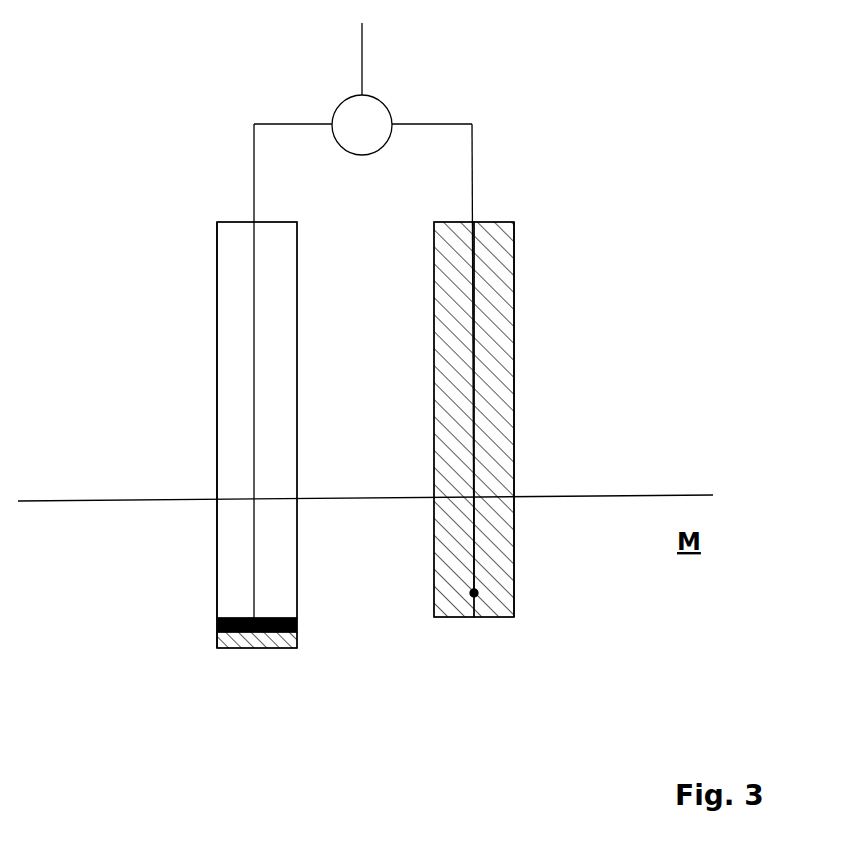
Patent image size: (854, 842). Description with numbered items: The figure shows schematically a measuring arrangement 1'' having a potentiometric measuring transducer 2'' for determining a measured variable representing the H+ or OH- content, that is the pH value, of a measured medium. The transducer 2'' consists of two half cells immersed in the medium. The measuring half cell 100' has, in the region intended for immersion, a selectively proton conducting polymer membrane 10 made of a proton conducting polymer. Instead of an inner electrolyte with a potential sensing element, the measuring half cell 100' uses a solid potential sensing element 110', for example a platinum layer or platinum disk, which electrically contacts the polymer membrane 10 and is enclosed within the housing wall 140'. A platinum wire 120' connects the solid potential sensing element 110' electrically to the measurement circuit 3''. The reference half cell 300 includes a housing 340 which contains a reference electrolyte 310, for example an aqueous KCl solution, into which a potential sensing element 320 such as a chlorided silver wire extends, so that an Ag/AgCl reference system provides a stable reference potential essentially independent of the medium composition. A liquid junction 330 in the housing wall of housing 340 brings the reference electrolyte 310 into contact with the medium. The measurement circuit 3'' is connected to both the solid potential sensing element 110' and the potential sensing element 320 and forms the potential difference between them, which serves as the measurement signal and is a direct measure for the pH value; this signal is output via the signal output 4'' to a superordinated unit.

The measuring arrangement 1'' is at (485, 68).
The potentiometric measuring transducer 2'' is at (385, 685).
The measurement circuit 3'' is at (332, 106).
The signal output 4'' is at (397, 56).
The polymer membrane 10 is at (223, 640).
The measuring half cell 100' is at (217, 406).
The solid potential sensing element 110' is at (221, 601).
The platinum wire 120' is at (217, 420).
The housing wall 140' is at (161, 435).
The reference half cell 300 is at (520, 222).
The reference electrolyte 310 is at (493, 328).
The potential sensing element 320 is at (480, 408).
The liquid junction 330 is at (478, 594).
The housing 340 is at (517, 548).